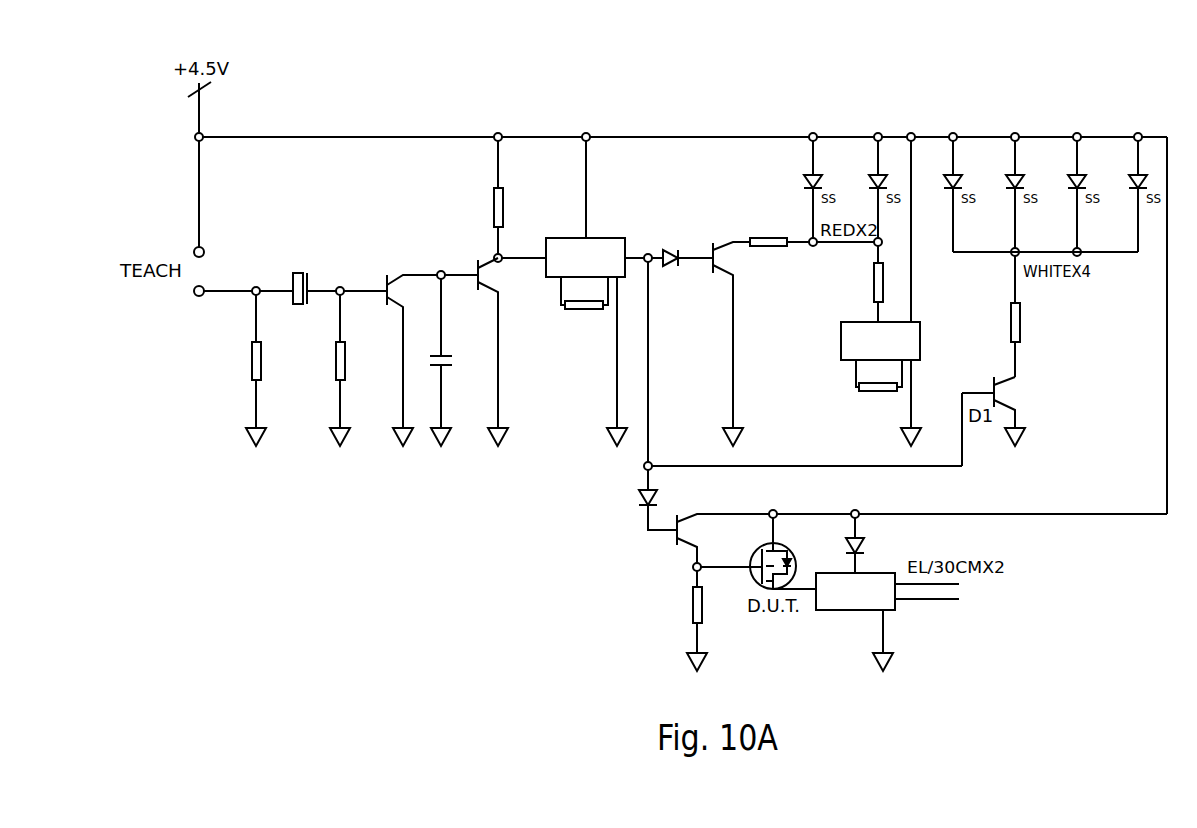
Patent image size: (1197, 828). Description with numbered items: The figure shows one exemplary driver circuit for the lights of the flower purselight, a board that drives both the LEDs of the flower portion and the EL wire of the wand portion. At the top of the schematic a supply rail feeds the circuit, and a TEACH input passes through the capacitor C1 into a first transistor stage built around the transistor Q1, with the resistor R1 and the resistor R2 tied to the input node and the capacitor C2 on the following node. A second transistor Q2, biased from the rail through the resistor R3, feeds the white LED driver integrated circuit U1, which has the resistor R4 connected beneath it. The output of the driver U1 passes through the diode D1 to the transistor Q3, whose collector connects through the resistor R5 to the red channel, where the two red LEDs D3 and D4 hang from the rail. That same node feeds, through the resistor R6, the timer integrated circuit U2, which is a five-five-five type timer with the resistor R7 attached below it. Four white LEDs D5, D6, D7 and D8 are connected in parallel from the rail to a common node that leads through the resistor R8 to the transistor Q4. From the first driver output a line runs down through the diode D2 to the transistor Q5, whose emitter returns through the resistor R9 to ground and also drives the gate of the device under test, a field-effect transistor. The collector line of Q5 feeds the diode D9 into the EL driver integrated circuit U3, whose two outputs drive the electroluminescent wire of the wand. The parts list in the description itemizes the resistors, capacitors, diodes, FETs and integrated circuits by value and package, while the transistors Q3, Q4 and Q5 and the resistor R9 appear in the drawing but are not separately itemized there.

The resistor R1 is at (246, 370).
The resistor R2 is at (329, 370).
The resistor R3 is at (484, 197).
The resistor R4 is at (594, 361).
The resistor R5 is at (779, 253).
The resistor R6 is at (864, 284).
The resistor R7 is at (879, 387).
The resistor R8 is at (1001, 316).
The resistor R9 is at (686, 621).
The ceramic capacitor C1 is at (298, 304).
The ceramic capacitor C2 is at (455, 362).
The N-channel FET Q1 is at (390, 360).
The N-channel FET Q2 is at (476, 352).
The transistor Q3 is at (725, 344).
The transistor Q4 is at (1019, 411).
The transistor Q5 is at (723, 538).
The red LED D1 is at (682, 244).
The red LED D2 is at (642, 500).
The transzorb D3 is at (801, 189).
The Schottky diode D4 is at (866, 189).
The white LED D5 is at (941, 196).
The white LED D6 is at (1002, 194).
The white LED D7 is at (1064, 194).
The white LED D8 is at (1125, 196).
The diode D9 is at (840, 545).
The white LED driver IC U1 is at (573, 209).
The timer IC U2 is at (881, 293).
The EL driver IC U3 is at (887, 622).